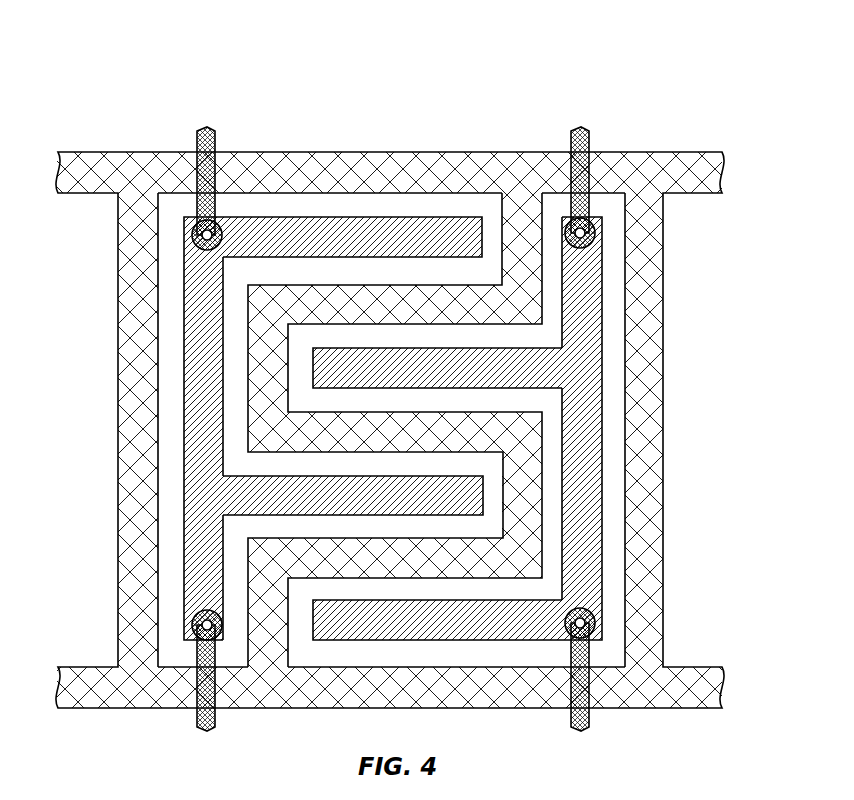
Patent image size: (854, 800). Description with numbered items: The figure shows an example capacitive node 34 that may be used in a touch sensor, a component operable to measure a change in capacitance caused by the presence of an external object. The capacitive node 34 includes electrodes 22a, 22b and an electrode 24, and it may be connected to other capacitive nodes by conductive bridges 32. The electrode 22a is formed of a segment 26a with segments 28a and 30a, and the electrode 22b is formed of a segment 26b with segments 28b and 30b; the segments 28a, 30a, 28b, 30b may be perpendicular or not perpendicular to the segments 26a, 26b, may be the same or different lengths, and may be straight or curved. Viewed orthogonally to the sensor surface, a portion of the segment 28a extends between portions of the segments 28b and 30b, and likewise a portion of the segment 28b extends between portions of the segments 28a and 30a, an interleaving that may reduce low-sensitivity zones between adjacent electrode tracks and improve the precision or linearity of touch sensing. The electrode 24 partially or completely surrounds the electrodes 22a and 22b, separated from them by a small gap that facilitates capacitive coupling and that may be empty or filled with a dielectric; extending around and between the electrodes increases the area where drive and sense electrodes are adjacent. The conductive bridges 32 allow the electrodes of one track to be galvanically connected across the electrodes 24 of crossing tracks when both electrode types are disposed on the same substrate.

The capacitive node 34 is at (140, 56).
The electrode 24 is at (522, 188).
The electrode 22a is at (178, 305).
The electrode 22b is at (616, 365).
The segment 26a is at (207, 406).
The segment 26b is at (600, 488).
The segment 28a is at (393, 493).
The segment 28b is at (392, 368).
The segment 30a is at (393, 237).
The segment 30b is at (405, 628).
The conductive bridge 32 is at (216, 143).